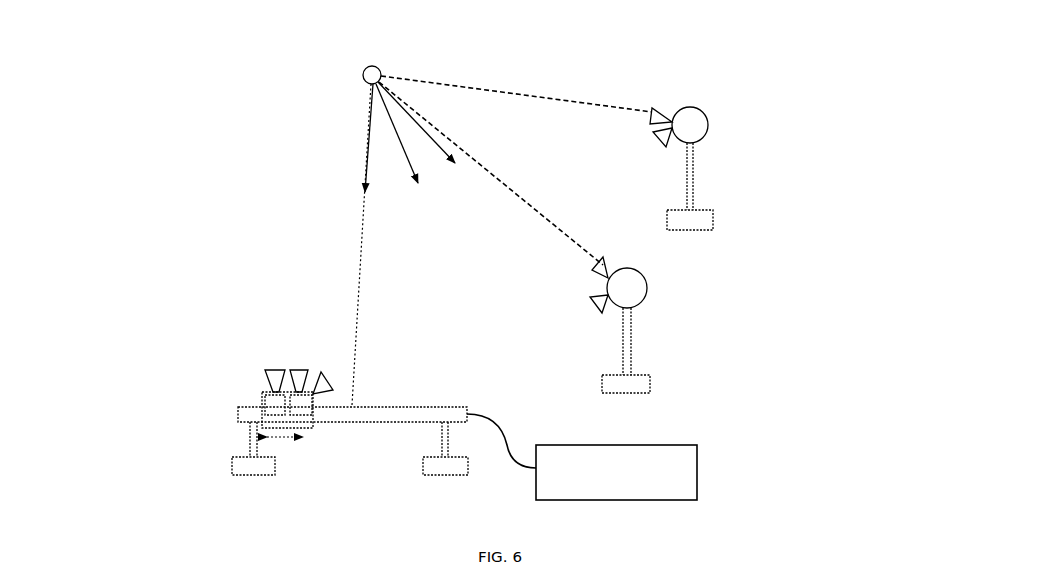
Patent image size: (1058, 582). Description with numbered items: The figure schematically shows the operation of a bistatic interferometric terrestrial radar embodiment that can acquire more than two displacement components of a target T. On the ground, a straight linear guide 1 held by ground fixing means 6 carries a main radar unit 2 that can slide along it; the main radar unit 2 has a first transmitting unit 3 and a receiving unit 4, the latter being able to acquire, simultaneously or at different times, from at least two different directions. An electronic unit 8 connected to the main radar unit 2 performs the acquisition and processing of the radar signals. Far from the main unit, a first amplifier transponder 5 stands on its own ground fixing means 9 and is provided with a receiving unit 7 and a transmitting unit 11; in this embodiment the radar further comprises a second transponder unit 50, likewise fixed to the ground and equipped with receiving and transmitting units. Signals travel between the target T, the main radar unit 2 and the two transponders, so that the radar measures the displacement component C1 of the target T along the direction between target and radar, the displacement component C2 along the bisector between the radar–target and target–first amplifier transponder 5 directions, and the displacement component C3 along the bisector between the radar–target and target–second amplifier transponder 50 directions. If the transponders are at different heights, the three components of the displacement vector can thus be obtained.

The target T is at (363, 77).
The displacement component c1 C1 is at (359, 138).
The displacement component c2 C2 is at (397, 140).
The displacement component c3 C3 is at (421, 134).
The second transponder unit 50 is at (690, 128).
The amplifier transponder 5 is at (627, 292).
The receiving unit 7 is at (657, 136).
The transmitting unit 11 is at (592, 297).
The ground fixing means 9 is at (693, 177).
The linear guide 1 is at (400, 413).
The main radar unit 2 is at (298, 420).
The first transmitting unit 3 is at (277, 375).
The receiving unit 4 is at (298, 398).
The ground fixing means 6 is at (263, 465).
The electronic unit 8 is at (582, 457).